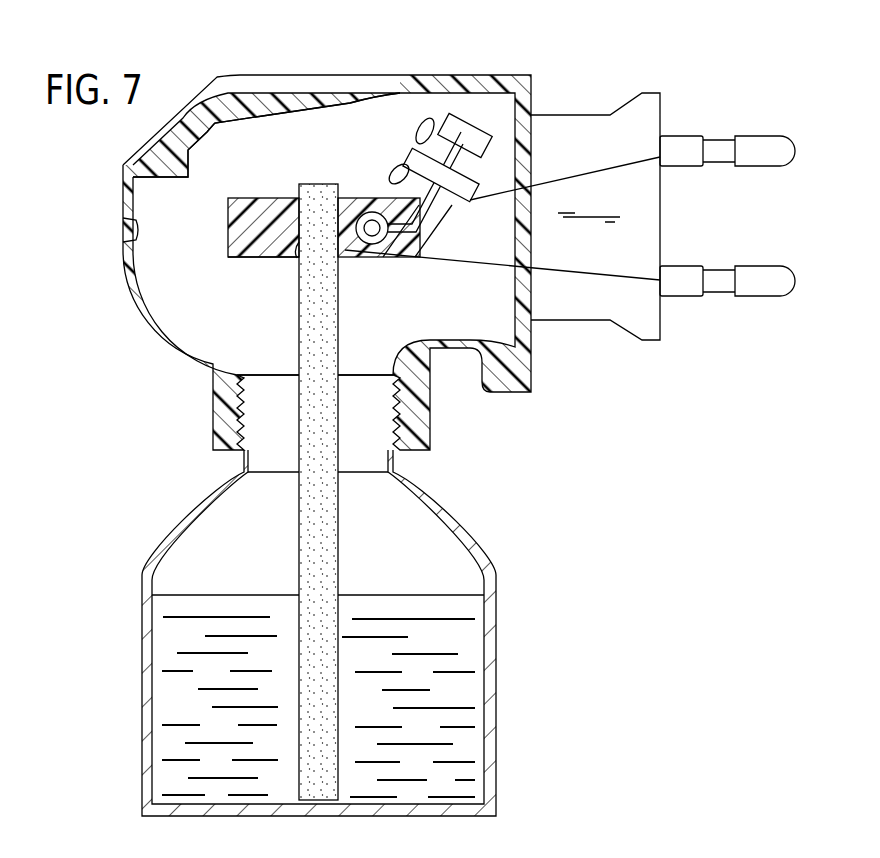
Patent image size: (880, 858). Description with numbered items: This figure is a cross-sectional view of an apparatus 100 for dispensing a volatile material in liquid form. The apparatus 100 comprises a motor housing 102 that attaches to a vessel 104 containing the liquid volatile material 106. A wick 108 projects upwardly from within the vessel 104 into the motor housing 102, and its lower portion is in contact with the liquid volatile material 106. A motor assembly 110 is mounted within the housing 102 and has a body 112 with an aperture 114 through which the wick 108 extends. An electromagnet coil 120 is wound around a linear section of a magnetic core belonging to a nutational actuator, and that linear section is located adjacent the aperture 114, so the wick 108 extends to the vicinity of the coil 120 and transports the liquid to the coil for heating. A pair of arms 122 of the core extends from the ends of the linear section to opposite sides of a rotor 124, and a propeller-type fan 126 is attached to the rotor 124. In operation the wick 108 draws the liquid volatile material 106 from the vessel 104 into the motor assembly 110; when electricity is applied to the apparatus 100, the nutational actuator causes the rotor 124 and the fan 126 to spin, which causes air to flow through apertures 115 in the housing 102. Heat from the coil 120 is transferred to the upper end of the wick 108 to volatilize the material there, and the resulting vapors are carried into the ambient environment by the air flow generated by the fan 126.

The apparatus 100 is at (151, 341).
The motor housing 102 is at (130, 272).
The vessel 104 is at (492, 782).
The liquid volatile material 106 is at (467, 698).
The wick 108 is at (332, 540).
The motor assembly 110 is at (227, 205).
The body 112 is at (258, 256).
The aperture 114 is at (302, 258).
The apertures 115 is at (347, 103).
The electromagnet coil 120 is at (372, 248).
The arms 122 is at (437, 218).
The rotor 124 is at (462, 180).
The propeller-type fan 126 is at (393, 172).